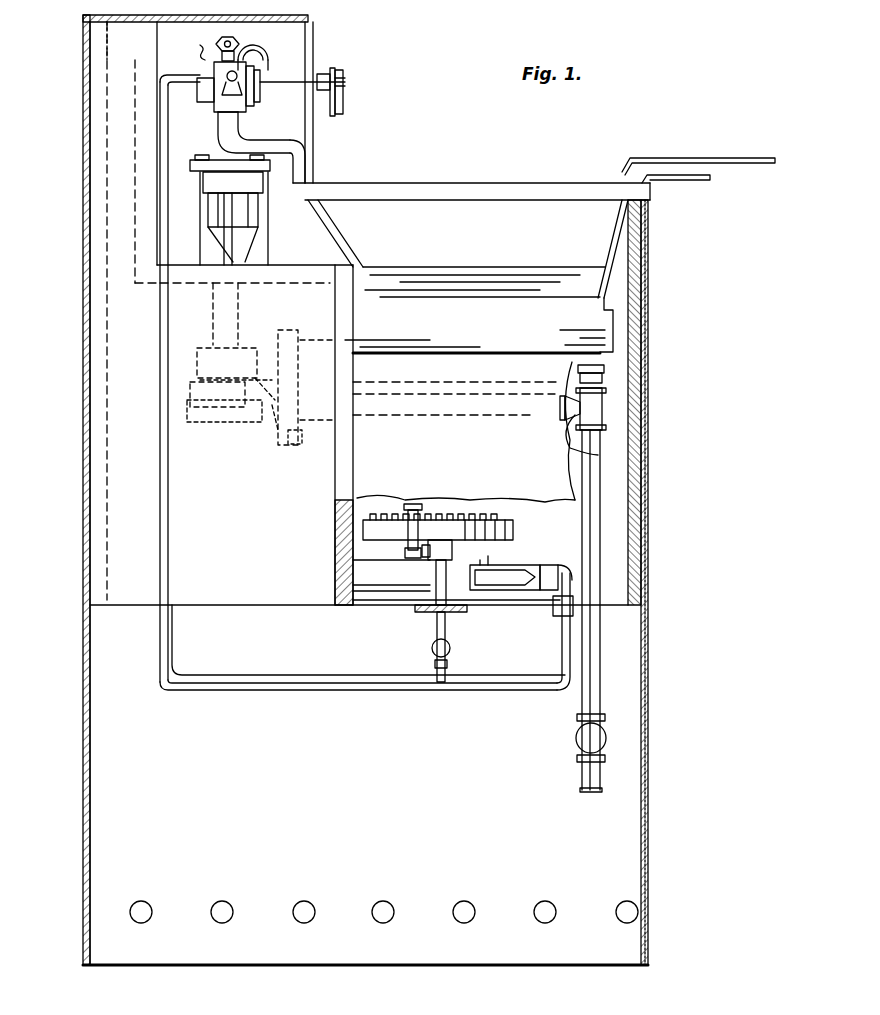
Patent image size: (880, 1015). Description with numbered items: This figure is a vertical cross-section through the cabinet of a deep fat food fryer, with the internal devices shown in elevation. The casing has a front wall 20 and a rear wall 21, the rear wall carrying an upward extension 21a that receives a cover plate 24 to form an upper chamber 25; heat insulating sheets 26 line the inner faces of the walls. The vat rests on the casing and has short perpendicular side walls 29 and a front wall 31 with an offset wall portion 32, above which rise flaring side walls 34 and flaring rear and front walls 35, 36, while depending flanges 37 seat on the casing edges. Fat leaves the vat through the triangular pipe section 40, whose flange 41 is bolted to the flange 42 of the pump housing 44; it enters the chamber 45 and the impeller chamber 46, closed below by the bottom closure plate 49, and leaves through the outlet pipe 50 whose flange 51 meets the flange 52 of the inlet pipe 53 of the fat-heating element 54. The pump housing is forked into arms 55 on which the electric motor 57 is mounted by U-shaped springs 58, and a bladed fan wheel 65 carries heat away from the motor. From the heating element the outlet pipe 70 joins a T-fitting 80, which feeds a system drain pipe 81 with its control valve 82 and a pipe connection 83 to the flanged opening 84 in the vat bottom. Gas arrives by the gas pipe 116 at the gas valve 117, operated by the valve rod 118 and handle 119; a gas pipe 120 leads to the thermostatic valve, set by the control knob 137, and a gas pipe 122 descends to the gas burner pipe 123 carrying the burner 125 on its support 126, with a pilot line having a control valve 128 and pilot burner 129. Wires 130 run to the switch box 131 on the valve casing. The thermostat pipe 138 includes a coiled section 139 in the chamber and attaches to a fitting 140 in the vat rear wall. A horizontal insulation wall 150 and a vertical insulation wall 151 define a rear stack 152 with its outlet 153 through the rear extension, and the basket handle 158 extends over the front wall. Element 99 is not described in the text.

The front wall 20 is at (650, 836).
The rear wall 21 is at (92, 788).
The rear wall extension 21a is at (85, 145).
The cover plate 24 is at (222, 16).
The chamber 25 is at (275, 38).
The heat insulating sheets 26 is at (105, 312).
The side walls 29 is at (520, 333).
The front wall 31 is at (605, 305).
The offset wall portion 32 is at (615, 332).
The flaring side walls 34 is at (608, 235).
The flaring rear wall 35 is at (333, 240).
The flaring front wall 36 is at (620, 262).
The depending flanges 37 is at (570, 200).
The triangular pipe section 40 is at (355, 330).
The flange 41 is at (317, 374).
The flange 42 is at (280, 345).
The pump housing 44 is at (216, 336).
The chamber 45 is at (209, 364).
The pump impeller chamber 46 is at (218, 428).
The bottom closure plate 49 is at (222, 430).
The outlet pipe 50 is at (262, 432).
The flange 51 is at (284, 438).
The flange 52 is at (300, 440).
The inlet pipe 53 is at (456, 413).
The fat-heating element 54 is at (450, 425).
The fork arms 55 is at (205, 198).
The electric motor 57 is at (214, 108).
The U-shaped springs 58 is at (187, 163).
The bladed fan wheel 65 is at (218, 205).
The outlet pipe 70 is at (594, 442).
The T-fitting 80 is at (606, 410).
The system drain pipe 81 is at (600, 520).
The control valve 82 is at (578, 740).
The pipe connection 83 is at (603, 380).
The flanged opening 84 is at (603, 368).
The bracket 99 is at (703, 181).
The gas pipe 116 is at (214, 40).
The gas valve 117 is at (255, 115).
The valve rod 118 is at (265, 100).
The operating handle 119 is at (338, 80).
The gas pipe 120 is at (245, 133).
The gas pipe 122 is at (178, 640).
The gas burner pipe 123 is at (368, 573).
The burner 125 is at (503, 520).
The support 126 is at (412, 610).
The control valve 128 is at (450, 648).
The pilot burner 129 is at (408, 525).
The wires 130 is at (200, 52).
The switch box 131 is at (200, 90).
The control knob 137 is at (343, 100).
The pipe 138 is at (325, 258).
The coiled section 139 is at (300, 54).
The fitting 140 is at (350, 290).
The horizontal insulation wall 150 is at (272, 270).
The vertical insulation wall 151 is at (135, 200).
The rear stack 152 is at (118, 172).
The stack outlet 153 is at (90, 72).
The angular handle 158 is at (670, 155).